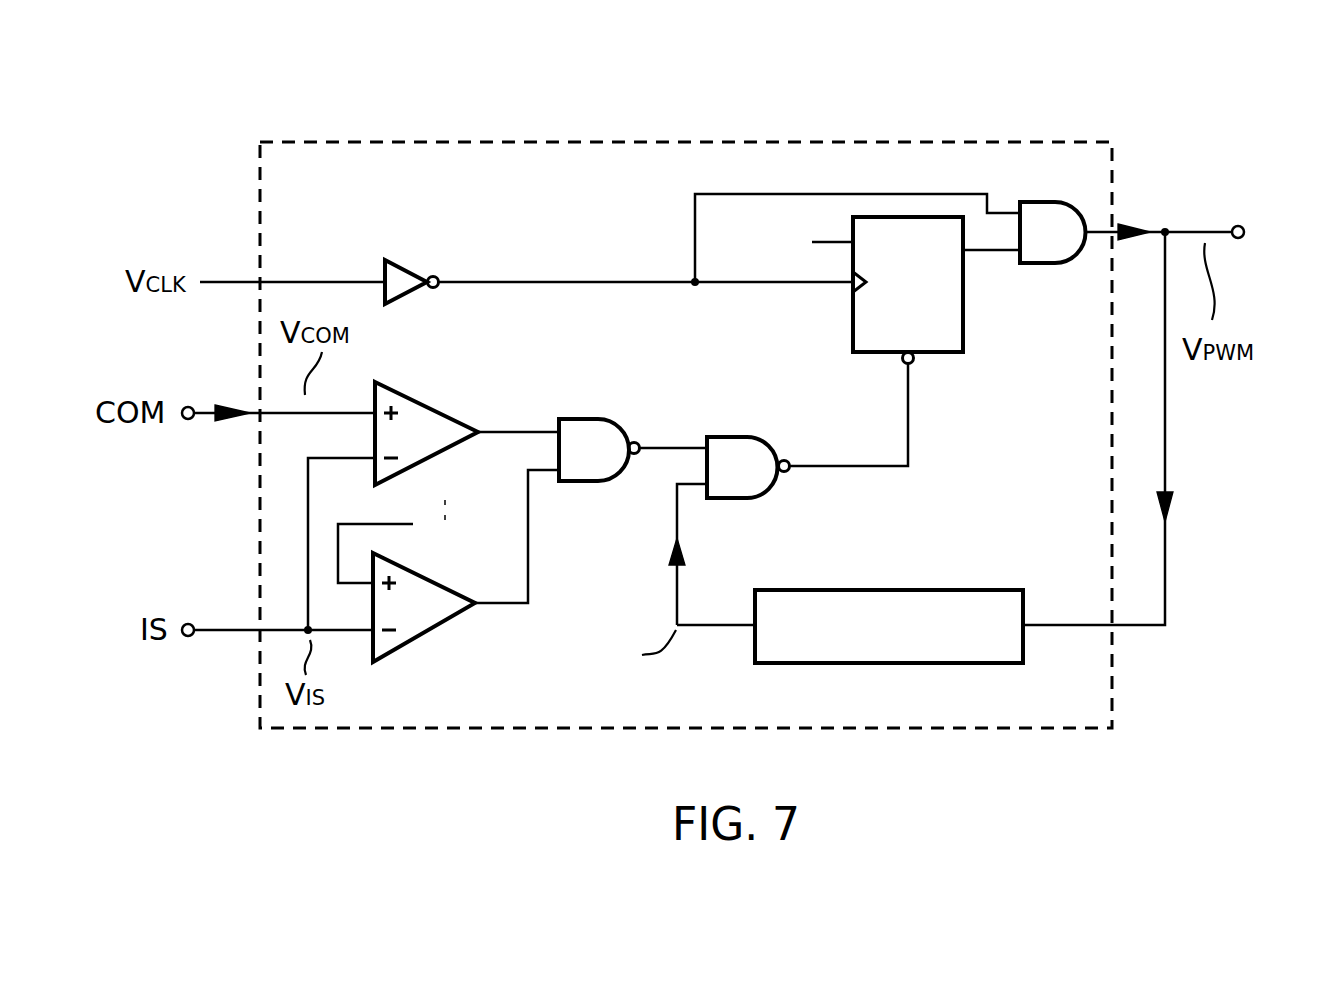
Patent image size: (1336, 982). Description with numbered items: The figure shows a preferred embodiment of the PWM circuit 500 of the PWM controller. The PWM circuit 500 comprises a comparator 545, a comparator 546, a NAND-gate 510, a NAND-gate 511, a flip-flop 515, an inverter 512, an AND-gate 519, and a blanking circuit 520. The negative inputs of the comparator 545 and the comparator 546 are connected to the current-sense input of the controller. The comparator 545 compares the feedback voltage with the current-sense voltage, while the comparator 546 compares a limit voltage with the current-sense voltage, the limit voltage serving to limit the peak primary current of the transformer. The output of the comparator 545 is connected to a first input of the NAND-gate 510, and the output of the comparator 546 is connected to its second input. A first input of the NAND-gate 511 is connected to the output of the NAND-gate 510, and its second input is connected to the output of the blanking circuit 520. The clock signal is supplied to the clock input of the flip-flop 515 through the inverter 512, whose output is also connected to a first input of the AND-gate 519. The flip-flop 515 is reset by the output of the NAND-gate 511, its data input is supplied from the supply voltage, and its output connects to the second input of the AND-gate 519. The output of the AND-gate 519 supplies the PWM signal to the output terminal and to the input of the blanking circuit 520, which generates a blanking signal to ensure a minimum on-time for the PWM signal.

The PWM circuit 500 is at (1112, 172).
The inverter 512 is at (418, 262).
The comparator 545 is at (423, 393).
The comparator 546 is at (425, 645).
The NAND-gate 510 is at (590, 412).
The NAND-gate 511 is at (737, 430).
The flip-flop 515 is at (948, 368).
The AND-gate 519 is at (1056, 272).
The blanking circuit 520 is at (995, 590).